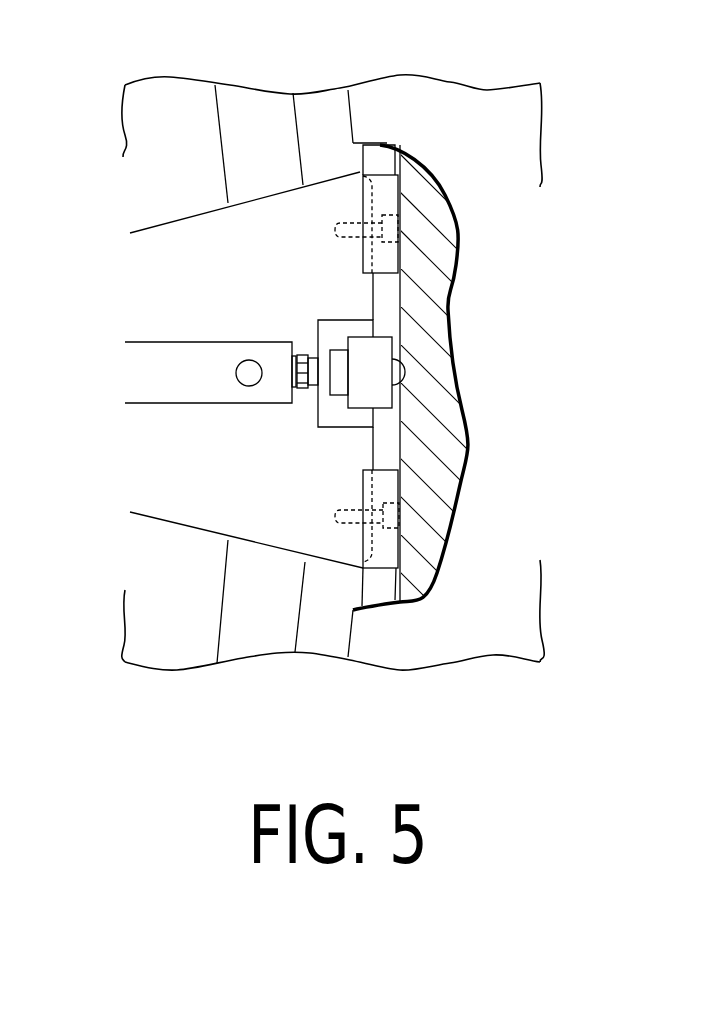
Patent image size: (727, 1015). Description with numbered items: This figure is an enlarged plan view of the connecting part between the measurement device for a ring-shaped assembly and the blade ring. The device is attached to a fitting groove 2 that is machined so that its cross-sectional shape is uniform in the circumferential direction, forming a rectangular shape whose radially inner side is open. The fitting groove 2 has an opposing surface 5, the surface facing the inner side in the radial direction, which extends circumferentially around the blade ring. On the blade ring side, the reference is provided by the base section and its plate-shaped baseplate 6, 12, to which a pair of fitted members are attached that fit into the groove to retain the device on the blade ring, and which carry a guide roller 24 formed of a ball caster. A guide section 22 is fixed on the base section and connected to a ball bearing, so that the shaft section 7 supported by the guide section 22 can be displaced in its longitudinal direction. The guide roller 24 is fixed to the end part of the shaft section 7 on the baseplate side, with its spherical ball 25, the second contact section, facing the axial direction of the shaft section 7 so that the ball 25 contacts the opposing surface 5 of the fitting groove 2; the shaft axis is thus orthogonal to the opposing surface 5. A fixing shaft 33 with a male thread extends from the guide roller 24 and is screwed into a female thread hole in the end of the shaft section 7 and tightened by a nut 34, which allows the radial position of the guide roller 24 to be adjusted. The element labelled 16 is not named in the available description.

The fitting groove 2 is at (380, 160).
The opposing surface 5 is at (390, 303).
The body / mounting portion 6, 12 is at (188, 495).
The shaft section 7 is at (300, 357).
The rib 16 is at (373, 448).
The guide section 22 is at (170, 385).
The guide roller 24 is at (377, 352).
The ball 25 is at (400, 375).
The fixing shaft 33 is at (323, 382).
The nut 34 is at (317, 382).